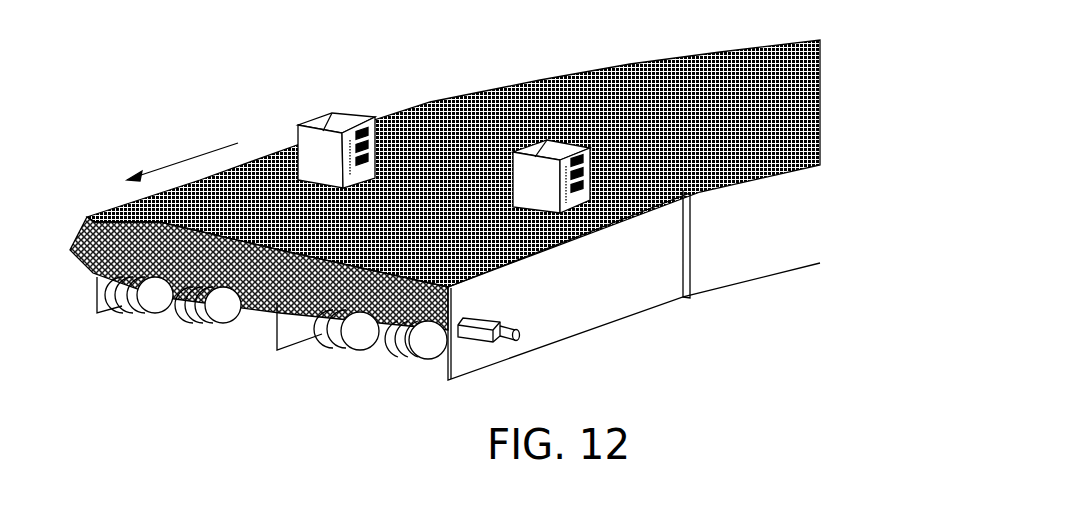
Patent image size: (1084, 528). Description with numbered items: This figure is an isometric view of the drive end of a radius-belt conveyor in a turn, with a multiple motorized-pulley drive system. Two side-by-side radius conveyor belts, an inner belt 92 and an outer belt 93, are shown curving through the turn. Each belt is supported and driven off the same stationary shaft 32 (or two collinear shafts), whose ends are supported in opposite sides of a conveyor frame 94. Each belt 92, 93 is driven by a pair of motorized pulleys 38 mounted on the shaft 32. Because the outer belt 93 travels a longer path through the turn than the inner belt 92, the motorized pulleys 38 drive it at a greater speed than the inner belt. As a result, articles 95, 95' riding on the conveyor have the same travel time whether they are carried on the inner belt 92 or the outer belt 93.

The outer radius conveyor belt 93 is at (593, 68).
The article 95 is at (322, 139).
The article 95' is at (572, 212).
The conveyor frame 94 is at (100, 313).
The inner radius conveyor belt 92 is at (710, 190).
The motorized pulleys 38 is at (160, 303).
The stationary shaft 32 is at (490, 334).